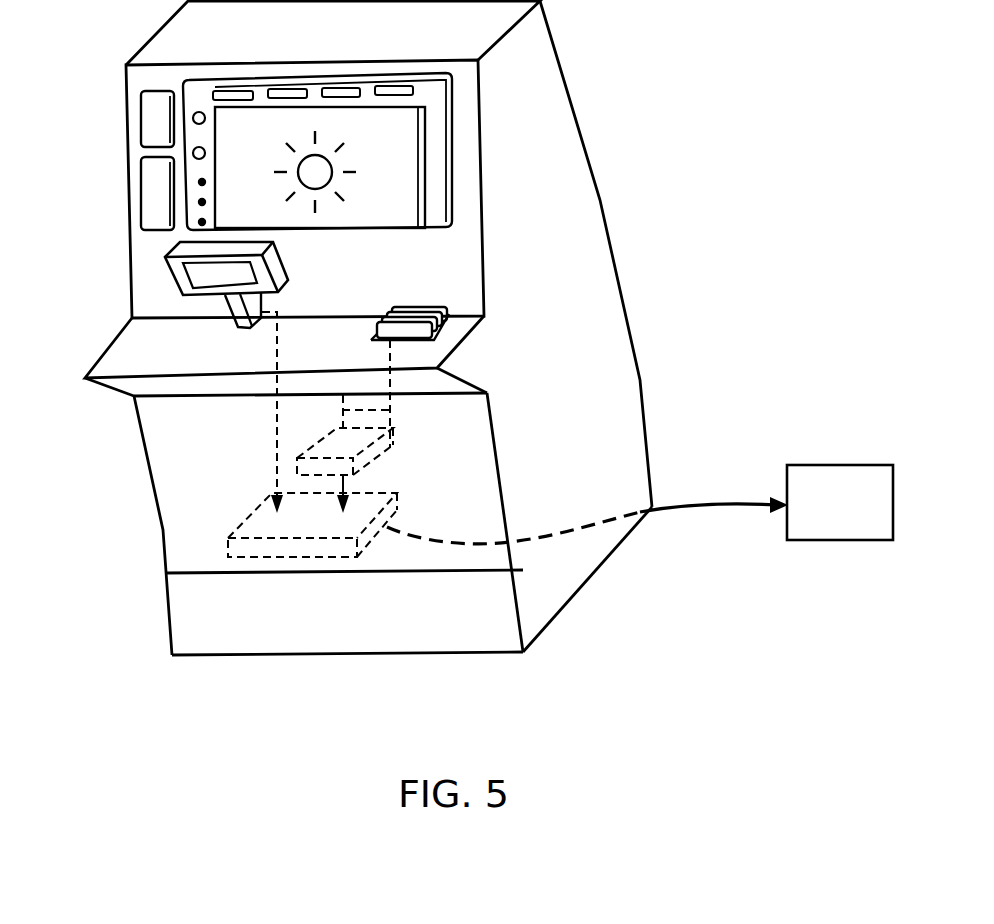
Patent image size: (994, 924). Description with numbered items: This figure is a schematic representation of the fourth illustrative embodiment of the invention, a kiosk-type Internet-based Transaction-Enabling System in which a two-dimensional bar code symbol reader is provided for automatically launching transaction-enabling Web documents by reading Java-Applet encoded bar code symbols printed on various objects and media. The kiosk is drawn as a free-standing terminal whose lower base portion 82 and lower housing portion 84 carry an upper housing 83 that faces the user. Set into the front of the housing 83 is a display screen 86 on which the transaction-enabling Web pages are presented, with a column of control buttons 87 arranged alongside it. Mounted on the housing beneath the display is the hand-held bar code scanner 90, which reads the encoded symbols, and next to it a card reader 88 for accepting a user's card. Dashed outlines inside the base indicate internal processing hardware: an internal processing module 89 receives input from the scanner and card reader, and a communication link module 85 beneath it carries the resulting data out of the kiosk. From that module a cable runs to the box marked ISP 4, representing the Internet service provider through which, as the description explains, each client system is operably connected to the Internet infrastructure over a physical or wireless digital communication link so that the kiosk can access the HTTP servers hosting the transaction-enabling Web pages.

The ISP 4 is at (828, 541).
The base unit 82 is at (130, 492).
The housing 83 is at (606, 198).
The lower housing portion 84 is at (148, 662).
The communication link module 85 is at (420, 485).
The display screen 86 is at (403, 147).
The control buttons 87 is at (150, 200).
The card reader 88 is at (418, 343).
The internal processing module 89 is at (292, 434).
The bar code scanner 90 is at (163, 255).